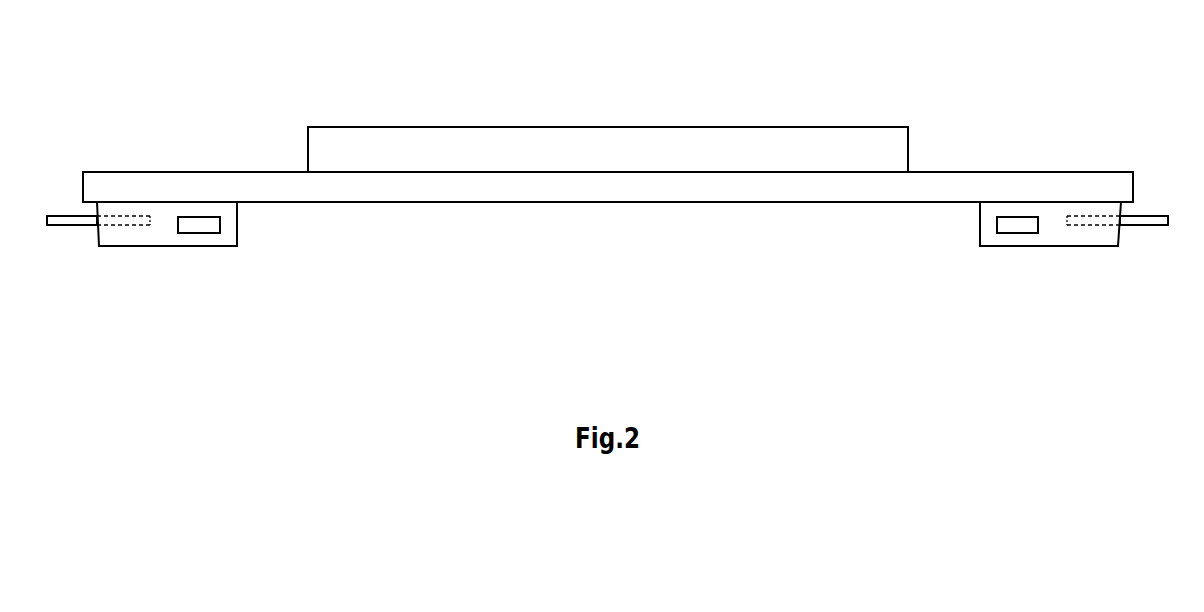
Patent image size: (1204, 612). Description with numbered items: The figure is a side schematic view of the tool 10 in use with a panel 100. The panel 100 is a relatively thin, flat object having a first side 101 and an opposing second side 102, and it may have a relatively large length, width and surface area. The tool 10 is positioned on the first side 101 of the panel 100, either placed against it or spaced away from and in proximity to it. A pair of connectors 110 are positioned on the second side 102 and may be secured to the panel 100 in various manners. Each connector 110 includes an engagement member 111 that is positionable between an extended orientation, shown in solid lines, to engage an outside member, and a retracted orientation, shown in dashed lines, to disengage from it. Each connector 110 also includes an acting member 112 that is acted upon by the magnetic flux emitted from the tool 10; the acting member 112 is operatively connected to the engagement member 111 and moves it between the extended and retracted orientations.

The tool 10 is at (623, 142).
The panel 100 is at (950, 192).
The first side 101 is at (230, 170).
The second side 102 is at (427, 203).
The connector 110 is at (142, 247).
The engagement member 111 is at (82, 225).
The acting member 112 is at (195, 225).